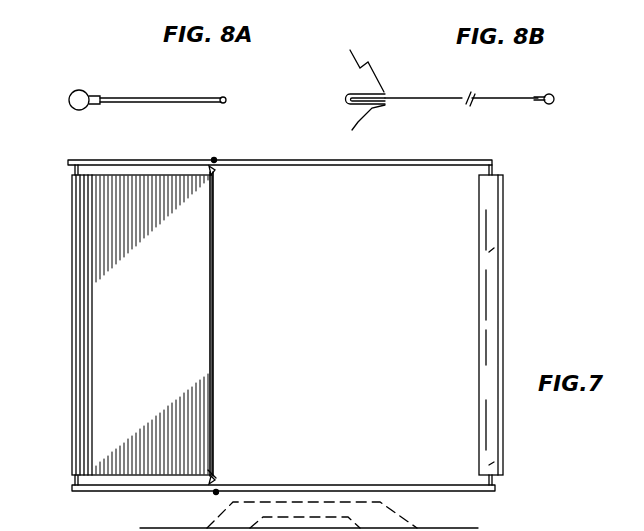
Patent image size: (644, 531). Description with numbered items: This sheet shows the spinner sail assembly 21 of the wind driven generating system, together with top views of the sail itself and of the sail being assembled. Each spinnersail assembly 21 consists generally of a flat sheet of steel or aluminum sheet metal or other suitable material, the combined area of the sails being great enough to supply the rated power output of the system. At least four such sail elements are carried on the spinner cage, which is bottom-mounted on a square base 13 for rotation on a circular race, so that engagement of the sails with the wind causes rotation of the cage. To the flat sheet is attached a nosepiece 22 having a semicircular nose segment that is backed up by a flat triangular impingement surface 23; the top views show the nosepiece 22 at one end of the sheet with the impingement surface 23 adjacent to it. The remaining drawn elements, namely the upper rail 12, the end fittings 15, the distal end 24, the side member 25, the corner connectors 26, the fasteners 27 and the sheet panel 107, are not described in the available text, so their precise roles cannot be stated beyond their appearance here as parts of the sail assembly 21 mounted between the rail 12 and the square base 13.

In FIG. 7, the top rail 12 is at (432, 160).
In FIG. 7, the square base 13 is at (368, 485).
In FIG. 7, the end connectors 15 is at (70, 160).
In FIG. 8B, the spinnersail assembly 21 is at (452, 98).
In FIG. 7, the spinnersail assembly 21 is at (214, 304).
In FIG. 8A, the nosepiece 22 is at (86, 92).
In FIG. 8B, the nosepiece 22 is at (374, 84).
In FIG. 7, the nosepiece 22 is at (70, 288).
In FIG. 8A, the flat triangular impingement surface 23 is at (96, 96).
In FIG. 8B, the flat triangular impingement surface 23 is at (386, 92).
In FIG. 8A, the rod end ball 24 is at (223, 97).
In FIG. 8B, the rod end ball 24 is at (553, 94).
In FIG. 7, the rod end ball 24 is at (214, 450).
In FIG. 7, the panel inner edge 25 is at (490, 254).
In FIG. 7, the rod end connector 26 is at (214, 170).
In FIG. 7, the rail fastener 27 is at (216, 158).
In FIG. 7, the curtain fabric 107 is at (214, 382).